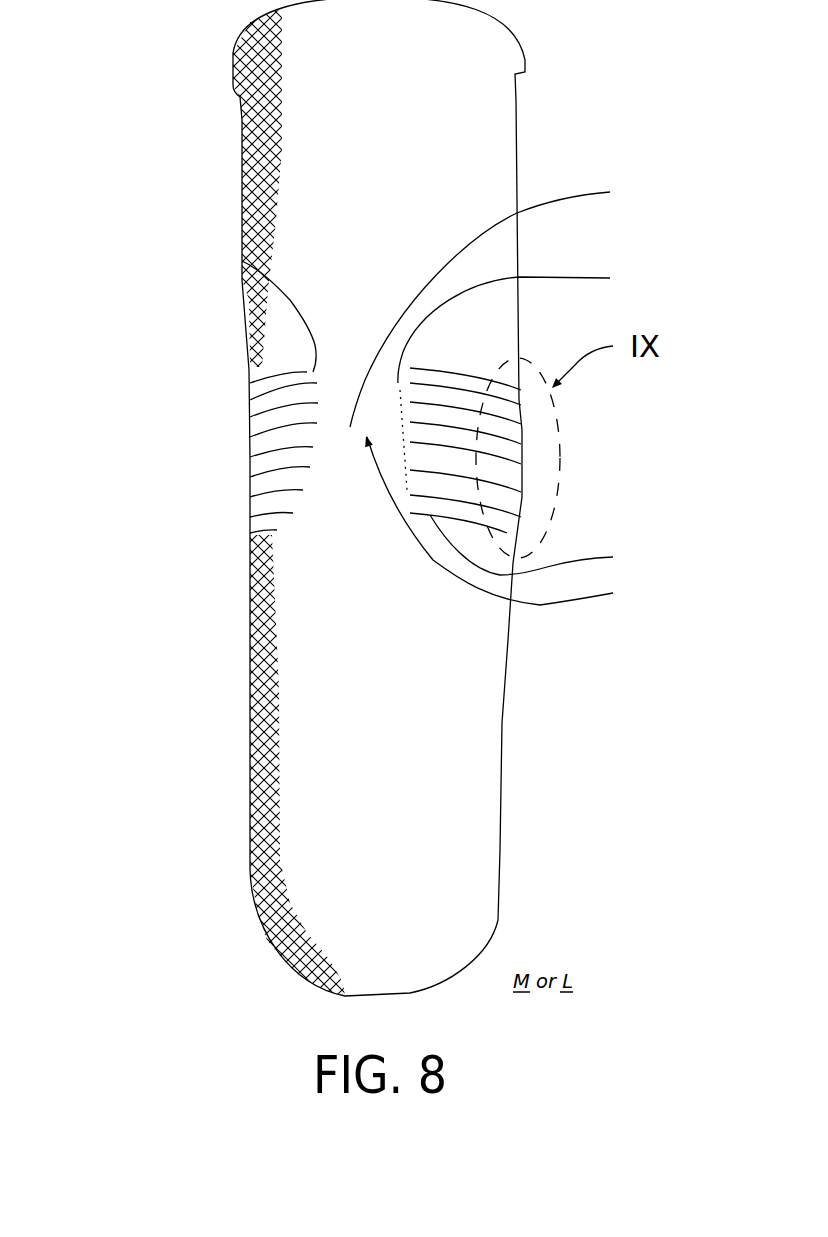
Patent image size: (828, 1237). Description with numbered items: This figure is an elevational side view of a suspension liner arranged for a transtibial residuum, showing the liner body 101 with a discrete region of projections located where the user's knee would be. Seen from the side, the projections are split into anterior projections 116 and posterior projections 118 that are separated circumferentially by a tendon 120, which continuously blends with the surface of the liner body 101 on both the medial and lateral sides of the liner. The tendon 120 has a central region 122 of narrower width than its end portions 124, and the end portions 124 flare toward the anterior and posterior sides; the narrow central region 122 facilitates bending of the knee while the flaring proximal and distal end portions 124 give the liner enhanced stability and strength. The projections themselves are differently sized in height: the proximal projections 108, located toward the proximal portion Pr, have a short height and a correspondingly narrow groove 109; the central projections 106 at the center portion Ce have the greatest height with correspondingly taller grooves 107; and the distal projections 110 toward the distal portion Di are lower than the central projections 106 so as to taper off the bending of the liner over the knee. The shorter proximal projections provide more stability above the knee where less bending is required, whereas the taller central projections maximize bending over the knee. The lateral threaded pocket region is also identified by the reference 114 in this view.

The liner body 101 is at (502, 790).
The central projections 106 is at (522, 450).
The grooves 107 is at (522, 465).
The proximal projections 108 is at (521, 391).
The narrow groove 109 is at (523, 402).
The distal projections 110 is at (522, 515).
The lateral threaded pocket 114 is at (340, 497).
The anterior projections 116 is at (521, 381).
The posterior projections 118 is at (242, 261).
The tendon 120 is at (505, 521).
The central region 122 is at (497, 306).
The end portions 124 is at (537, 545).
The proximal portion Pr is at (517, 102).
The distal portion Di is at (502, 887).
The center portion Ce is at (250, 713).